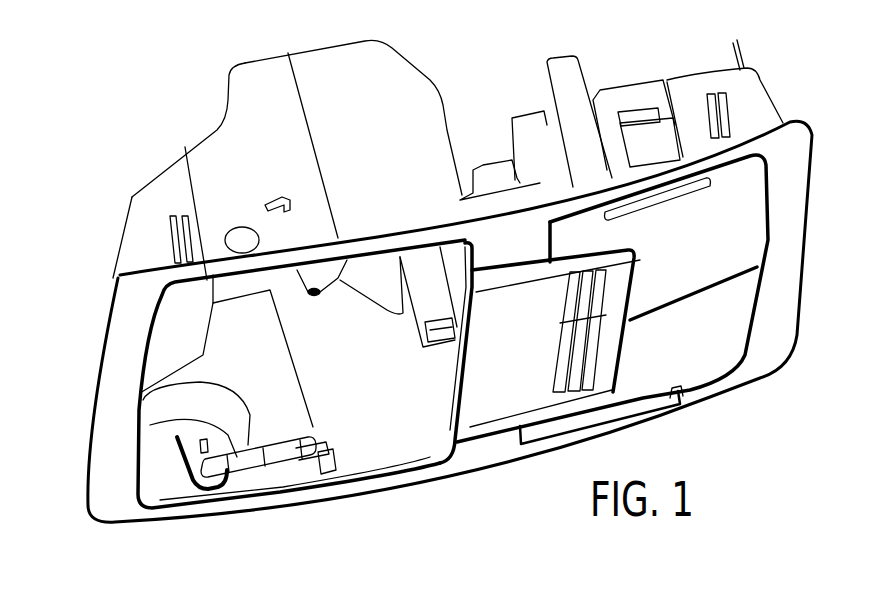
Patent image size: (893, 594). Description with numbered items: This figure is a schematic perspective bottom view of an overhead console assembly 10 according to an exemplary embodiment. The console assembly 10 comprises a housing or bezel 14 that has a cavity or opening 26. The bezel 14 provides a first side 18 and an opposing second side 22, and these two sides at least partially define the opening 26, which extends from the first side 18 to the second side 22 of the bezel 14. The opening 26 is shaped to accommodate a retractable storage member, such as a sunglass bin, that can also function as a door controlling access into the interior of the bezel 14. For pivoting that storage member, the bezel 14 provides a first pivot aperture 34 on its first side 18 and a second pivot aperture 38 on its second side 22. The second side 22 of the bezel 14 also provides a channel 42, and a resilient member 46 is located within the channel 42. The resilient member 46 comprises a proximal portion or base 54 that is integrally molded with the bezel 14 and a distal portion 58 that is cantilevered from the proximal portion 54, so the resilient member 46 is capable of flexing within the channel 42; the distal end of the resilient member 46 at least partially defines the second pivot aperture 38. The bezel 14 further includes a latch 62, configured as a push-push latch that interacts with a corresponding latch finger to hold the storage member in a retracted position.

The console assembly 10 is at (156, 58).
The bezel 14 is at (155, 182).
The first side 18 is at (368, 225).
The second side 22 is at (384, 501).
The opening 26 is at (400, 421).
The first pivot aperture 34 is at (241, 249).
The second pivot aperture 38 is at (189, 490).
The channel 42 is at (190, 419).
The resilient member 46 is at (264, 478).
The proximal portion 54 is at (300, 460).
The distal portion 58 is at (212, 392).
The latch 62 is at (463, 422).